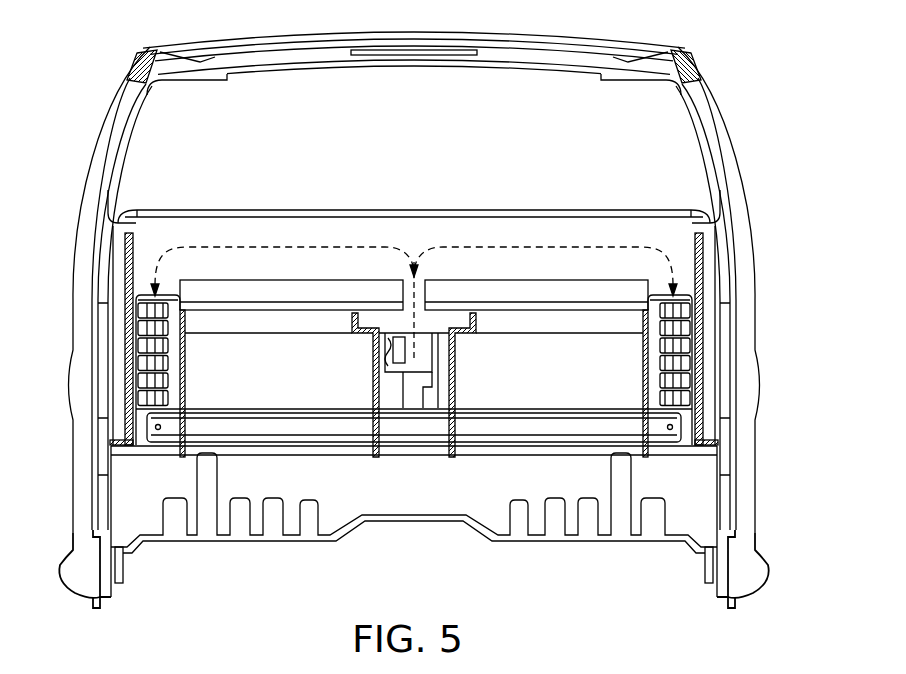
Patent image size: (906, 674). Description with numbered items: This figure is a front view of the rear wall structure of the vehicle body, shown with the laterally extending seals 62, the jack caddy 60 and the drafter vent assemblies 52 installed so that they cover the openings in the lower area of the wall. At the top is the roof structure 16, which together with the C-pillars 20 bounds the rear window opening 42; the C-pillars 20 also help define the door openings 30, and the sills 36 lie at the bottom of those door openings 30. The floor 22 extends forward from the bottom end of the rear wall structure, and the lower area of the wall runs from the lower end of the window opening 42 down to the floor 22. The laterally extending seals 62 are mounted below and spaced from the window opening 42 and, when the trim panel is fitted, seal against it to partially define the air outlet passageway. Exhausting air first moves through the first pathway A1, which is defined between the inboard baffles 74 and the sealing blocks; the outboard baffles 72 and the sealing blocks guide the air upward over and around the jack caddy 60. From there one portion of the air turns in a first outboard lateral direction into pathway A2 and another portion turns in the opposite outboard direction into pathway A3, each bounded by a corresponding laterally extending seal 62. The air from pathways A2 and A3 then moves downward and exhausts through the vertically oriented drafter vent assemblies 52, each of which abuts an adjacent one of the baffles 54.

The roof structure 16 is at (546, 38).
The C-pillars 20 is at (113, 117).
The floor 22 is at (604, 515).
The door openings 30 is at (97, 292).
The sills 36 is at (83, 553).
The rear window opening 42 is at (240, 210).
The drafter vent assemblies 52 is at (157, 365).
The baffles 54 is at (127, 343).
The jack caddy 60 is at (437, 350).
The laterally extending seals 62 is at (293, 302).
The outboard baffles 72 is at (372, 380).
The inboard baffles 74 is at (187, 358).
The first pathway A1 is at (413, 358).
The second pathway A2 is at (333, 220).
The third pathway A3 is at (598, 247).